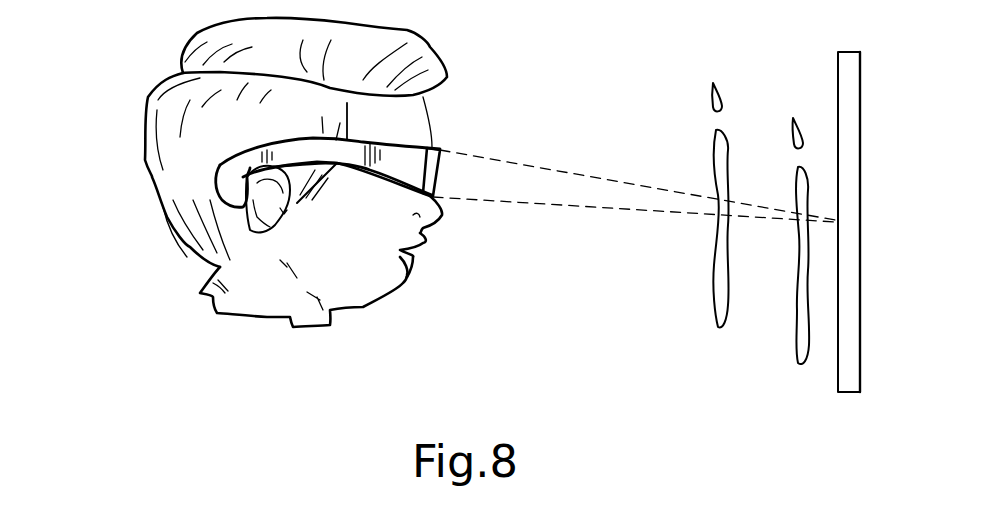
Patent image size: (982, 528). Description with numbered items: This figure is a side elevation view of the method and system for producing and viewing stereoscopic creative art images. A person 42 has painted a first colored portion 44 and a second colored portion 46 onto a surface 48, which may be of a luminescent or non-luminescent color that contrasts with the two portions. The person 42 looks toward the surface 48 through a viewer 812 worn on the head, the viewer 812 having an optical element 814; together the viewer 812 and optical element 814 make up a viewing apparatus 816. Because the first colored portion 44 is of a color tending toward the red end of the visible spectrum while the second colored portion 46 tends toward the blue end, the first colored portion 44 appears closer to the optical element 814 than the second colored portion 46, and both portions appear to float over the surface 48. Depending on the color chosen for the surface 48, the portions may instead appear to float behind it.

The person 42 is at (303, 226).
The viewer 812 is at (237, 192).
The optical element 814 is at (436, 148).
The viewing apparatus 816 is at (353, 187).
The first colored portion 44 is at (720, 330).
The second colored portion 46 is at (798, 365).
The surface 48 is at (847, 385).